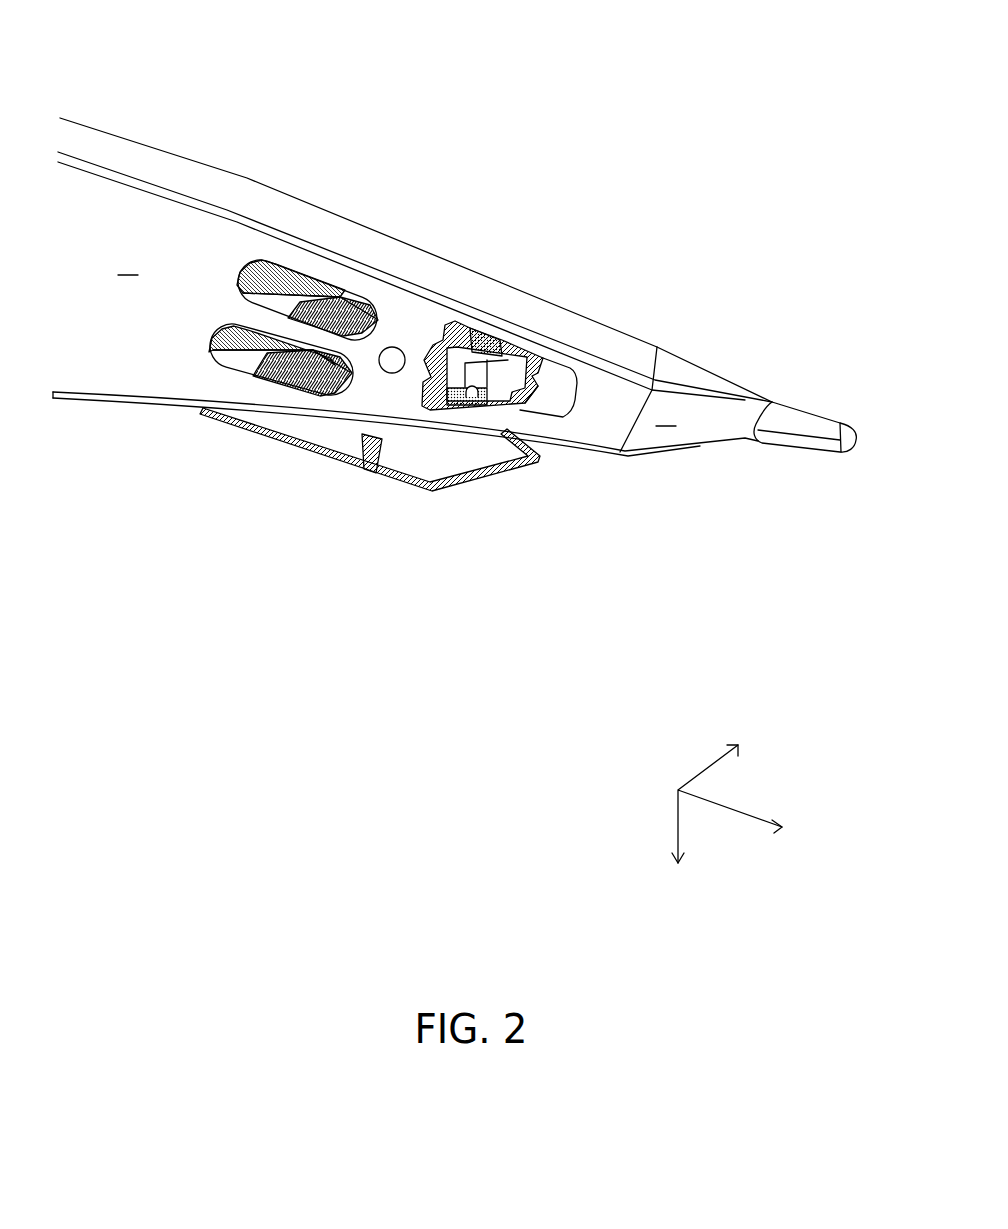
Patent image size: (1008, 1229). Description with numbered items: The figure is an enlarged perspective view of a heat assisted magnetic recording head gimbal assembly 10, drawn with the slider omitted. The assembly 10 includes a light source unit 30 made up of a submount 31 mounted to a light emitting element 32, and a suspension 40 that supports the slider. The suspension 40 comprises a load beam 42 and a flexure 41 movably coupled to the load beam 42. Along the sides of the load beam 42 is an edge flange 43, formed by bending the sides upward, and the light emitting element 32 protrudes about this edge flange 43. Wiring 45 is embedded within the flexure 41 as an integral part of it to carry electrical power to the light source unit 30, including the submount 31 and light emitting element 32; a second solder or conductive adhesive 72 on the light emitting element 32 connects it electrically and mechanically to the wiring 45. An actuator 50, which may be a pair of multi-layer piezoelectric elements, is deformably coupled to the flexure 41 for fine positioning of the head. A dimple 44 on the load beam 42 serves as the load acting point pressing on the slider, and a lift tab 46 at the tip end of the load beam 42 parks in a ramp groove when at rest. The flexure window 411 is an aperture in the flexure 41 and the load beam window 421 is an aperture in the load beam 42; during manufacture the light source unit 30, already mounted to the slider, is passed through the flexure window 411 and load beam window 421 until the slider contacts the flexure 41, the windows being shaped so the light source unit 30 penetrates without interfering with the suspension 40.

The heat assisted magnetic recording head gimbal assembly 10 is at (306, 38).
The light source unit 30 is at (548, 361).
The submount 31 is at (495, 340).
The light emitting element 32 is at (555, 380).
The suspension 40 is at (128, 264).
The flexure 41 is at (425, 483).
The load beam 42 is at (648, 399).
The edge flange 43 is at (310, 222).
The dimple 44 is at (388, 367).
The wiring 45 is at (478, 393).
The lift tab 46 is at (805, 425).
The actuator 50 is at (353, 315).
The second solder or conductive adhesive 72 is at (473, 400).
The flexure window 411 is at (553, 418).
The load beam window 421 is at (511, 405).